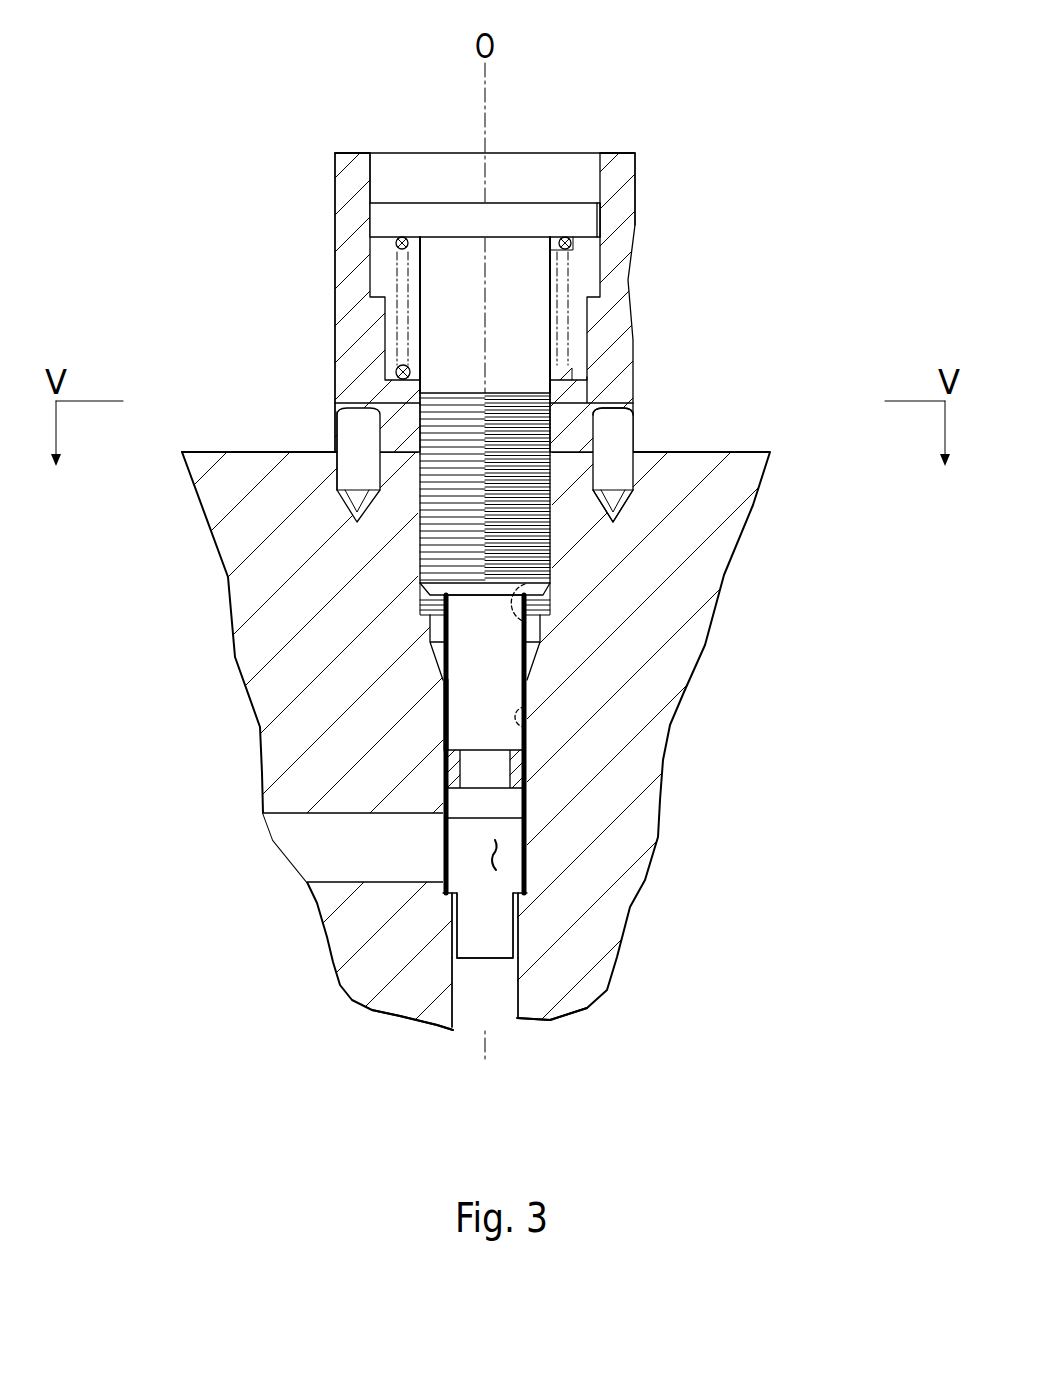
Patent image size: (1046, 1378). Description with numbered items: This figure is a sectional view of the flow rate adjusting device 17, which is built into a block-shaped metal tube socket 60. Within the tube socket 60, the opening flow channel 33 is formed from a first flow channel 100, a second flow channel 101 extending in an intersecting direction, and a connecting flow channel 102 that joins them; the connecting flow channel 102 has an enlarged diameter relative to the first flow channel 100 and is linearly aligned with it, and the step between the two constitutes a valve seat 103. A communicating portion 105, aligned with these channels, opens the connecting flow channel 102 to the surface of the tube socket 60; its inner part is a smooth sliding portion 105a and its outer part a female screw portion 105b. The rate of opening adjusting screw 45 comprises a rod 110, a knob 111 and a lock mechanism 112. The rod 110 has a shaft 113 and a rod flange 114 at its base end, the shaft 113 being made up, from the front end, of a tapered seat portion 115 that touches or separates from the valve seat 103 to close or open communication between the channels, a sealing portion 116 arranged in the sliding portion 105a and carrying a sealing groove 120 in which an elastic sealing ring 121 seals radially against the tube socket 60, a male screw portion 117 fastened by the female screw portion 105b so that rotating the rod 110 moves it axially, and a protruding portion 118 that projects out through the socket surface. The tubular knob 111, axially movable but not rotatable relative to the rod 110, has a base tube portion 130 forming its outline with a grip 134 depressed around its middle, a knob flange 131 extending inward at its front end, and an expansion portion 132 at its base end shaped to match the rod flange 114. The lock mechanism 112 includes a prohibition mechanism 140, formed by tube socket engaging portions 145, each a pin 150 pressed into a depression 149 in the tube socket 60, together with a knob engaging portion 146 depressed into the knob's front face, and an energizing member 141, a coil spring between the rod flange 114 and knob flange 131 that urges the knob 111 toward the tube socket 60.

The flow rate adjusting device 17 is at (367, 83).
The knob 111 is at (331, 149).
The rod 110 is at (432, 202).
The rod flange 114 is at (575, 213).
The rate of opening adjusting screw 45 is at (637, 153).
The grip 134 is at (338, 256).
The expansion portion 132 is at (595, 256).
The protruding portion 118 is at (523, 317).
The base tube portion 130 is at (617, 337).
The energizing member 141 is at (403, 372).
The knob engaging portion 146 is at (633, 418).
The tube socket 60 is at (772, 450).
The knob flange 131 is at (380, 428).
The prohibition mechanism 140 is at (333, 435).
The pin 150 is at (625, 437).
The tube socket engaging portion 145 is at (333, 507).
The depression 149 is at (665, 487).
The male screw portion 117 is at (553, 557).
The lock mechanism 112 is at (228, 580).
The female screw portion 105b is at (540, 633).
The communicating portion 105 is at (698, 655).
The shaft 113 is at (418, 585).
The sliding portion 105a is at (527, 727).
The sealing portion 116 is at (455, 712).
The sealing groove 120 is at (523, 760).
The second flow channel 101 is at (293, 822).
The sealing ring 121 is at (517, 858).
The connecting flow channel 102 is at (517, 950).
The valve seat 103 is at (437, 960).
The first flow channel 100 is at (507, 1010).
The seat portion 115 is at (520, 923).
The opening flow channel 33 is at (450, 1035).